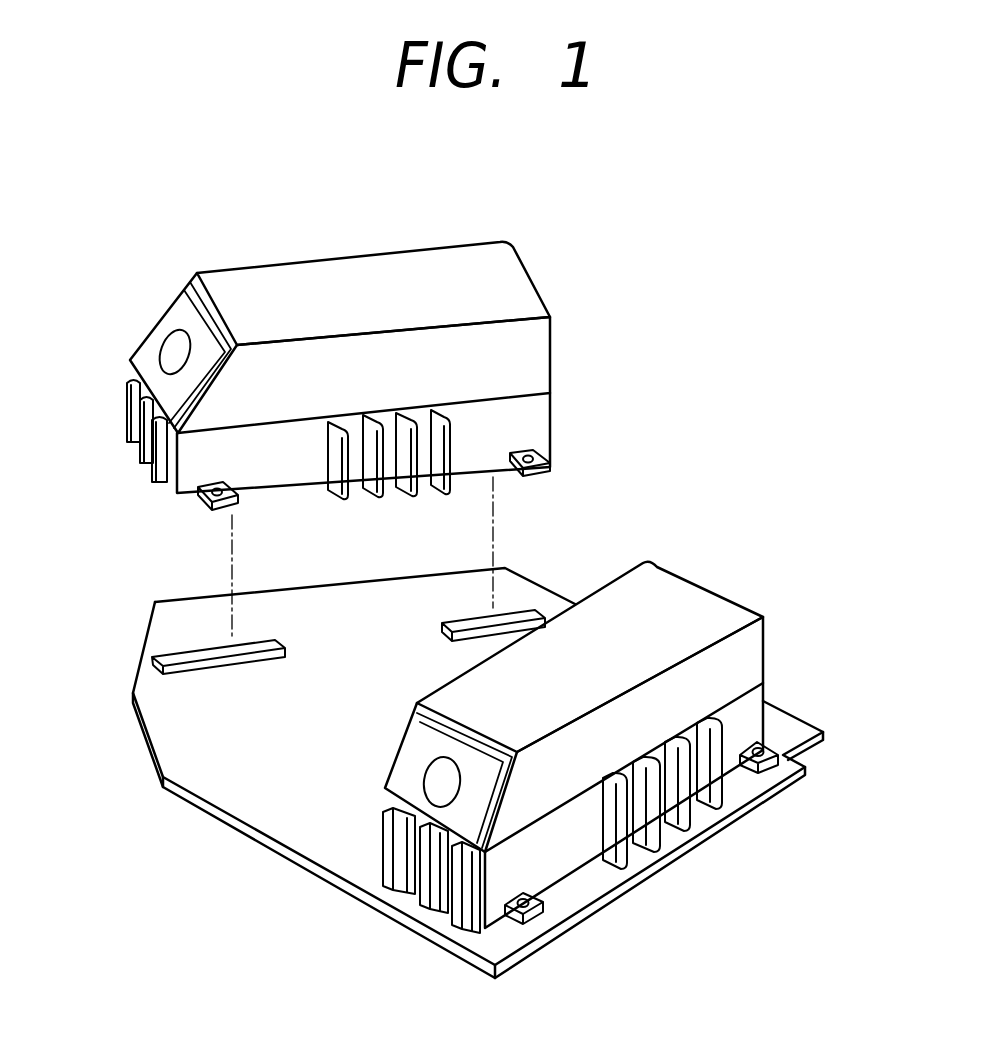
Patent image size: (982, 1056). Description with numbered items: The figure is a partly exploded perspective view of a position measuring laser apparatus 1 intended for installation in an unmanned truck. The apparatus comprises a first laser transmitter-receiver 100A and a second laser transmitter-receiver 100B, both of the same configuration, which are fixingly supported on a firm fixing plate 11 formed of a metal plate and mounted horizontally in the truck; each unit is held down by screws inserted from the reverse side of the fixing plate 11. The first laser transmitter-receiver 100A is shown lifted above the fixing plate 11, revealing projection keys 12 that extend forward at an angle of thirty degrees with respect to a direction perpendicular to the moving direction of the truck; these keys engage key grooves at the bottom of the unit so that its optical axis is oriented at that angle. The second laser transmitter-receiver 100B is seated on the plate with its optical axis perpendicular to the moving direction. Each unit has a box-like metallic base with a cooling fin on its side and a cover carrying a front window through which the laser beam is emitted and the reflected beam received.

The position measuring laser apparatus 1 is at (664, 252).
The fixing plate 11 is at (563, 898).
The projection keys 12 is at (510, 612).
The first laser transmitter-receiver 100A is at (405, 221).
The second laser transmitter-receiver 100B is at (721, 567).